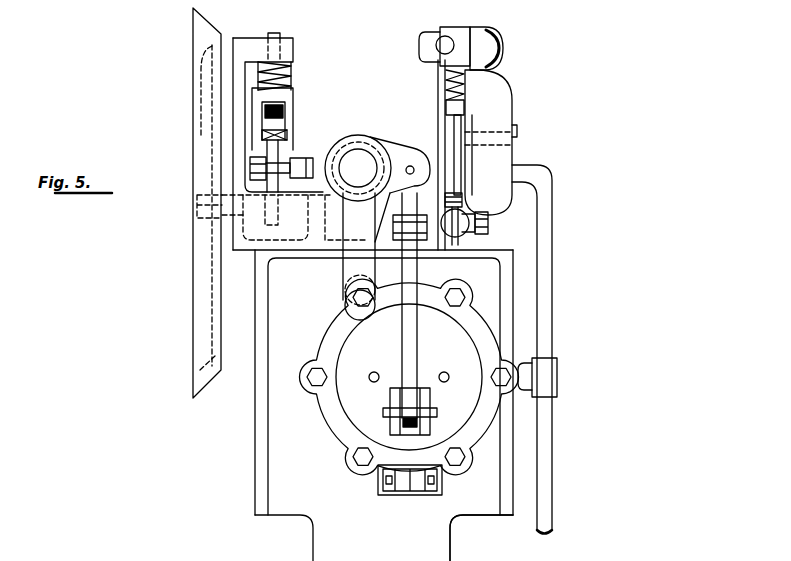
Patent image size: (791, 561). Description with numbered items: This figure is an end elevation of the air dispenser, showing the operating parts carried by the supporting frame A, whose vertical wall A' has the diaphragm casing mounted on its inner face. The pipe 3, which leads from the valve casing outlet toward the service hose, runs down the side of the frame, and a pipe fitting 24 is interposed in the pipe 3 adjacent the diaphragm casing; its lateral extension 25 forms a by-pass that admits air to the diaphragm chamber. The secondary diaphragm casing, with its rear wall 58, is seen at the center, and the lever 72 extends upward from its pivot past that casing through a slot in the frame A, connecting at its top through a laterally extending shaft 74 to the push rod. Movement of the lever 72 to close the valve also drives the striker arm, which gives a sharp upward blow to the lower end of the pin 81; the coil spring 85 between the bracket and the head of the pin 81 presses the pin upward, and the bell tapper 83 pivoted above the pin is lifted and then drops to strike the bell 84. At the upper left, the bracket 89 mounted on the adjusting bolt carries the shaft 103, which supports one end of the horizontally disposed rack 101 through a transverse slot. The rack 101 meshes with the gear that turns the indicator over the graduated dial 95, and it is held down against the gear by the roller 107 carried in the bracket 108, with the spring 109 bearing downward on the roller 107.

The pipe 3 is at (553, 211).
The pipe fitting 24 is at (557, 370).
The lateral extension 25 is at (530, 365).
The rear wall 58 is at (330, 425).
The lever 72 is at (418, 353).
The shaft 74 is at (478, 237).
The pin 81 is at (461, 128).
The bell tapper 83 is at (505, 58).
The bell 84 is at (343, 270).
The coil spring 85 is at (445, 88).
The bracket 89 is at (399, 151).
The dial 95 is at (192, 321).
The rack 101 is at (300, 145).
The shaft 103 is at (298, 160).
The roller 107 is at (284, 122).
The bracket 108 is at (254, 37).
The spring 109 is at (290, 78).
The frame A is at (373, 405).
The vertical wall A' is at (481, 520).